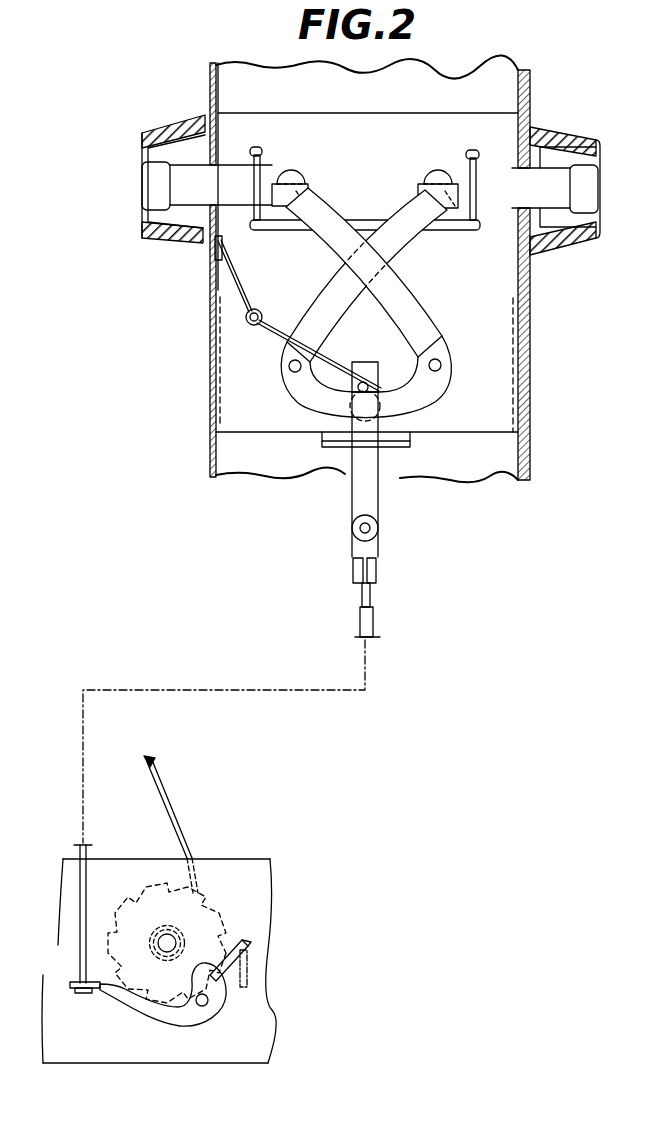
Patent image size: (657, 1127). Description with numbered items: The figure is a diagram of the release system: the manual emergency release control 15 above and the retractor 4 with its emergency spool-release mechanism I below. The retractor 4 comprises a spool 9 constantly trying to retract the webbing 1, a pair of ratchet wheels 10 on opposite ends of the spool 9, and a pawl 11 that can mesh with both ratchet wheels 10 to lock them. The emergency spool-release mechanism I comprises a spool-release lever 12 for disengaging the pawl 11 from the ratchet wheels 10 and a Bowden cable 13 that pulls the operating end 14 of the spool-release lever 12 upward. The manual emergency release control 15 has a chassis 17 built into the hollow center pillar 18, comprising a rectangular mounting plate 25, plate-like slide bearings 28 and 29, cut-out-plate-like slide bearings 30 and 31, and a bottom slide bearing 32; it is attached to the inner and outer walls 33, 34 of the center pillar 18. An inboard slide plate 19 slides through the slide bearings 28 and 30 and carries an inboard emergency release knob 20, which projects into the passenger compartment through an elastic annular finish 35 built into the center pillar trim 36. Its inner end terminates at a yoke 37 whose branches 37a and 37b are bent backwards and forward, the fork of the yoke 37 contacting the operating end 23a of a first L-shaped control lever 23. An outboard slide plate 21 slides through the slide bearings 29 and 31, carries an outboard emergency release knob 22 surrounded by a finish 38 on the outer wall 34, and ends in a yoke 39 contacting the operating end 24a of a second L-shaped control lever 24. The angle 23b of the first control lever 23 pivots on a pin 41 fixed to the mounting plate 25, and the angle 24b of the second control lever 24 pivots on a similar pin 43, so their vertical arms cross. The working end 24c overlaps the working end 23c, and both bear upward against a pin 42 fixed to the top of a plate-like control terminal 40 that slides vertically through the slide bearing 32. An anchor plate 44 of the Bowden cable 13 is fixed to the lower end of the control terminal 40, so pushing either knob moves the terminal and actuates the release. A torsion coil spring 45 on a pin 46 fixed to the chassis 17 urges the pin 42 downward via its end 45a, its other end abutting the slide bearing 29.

The webbing 1 is at (168, 792).
The retractor 4 is at (238, 850).
The spool 9 is at (142, 874).
The ratchet wheels 10 is at (225, 917).
The pawl 11 is at (250, 945).
The spool-release lever 12 is at (128, 1004).
The Bowden cable 13 is at (80, 884).
The operating end 14 is at (80, 992).
The manual emergency release control 15 is at (488, 100).
The chassis 17 is at (475, 445).
The center pillar 18 is at (200, 69).
The inboard slide plate 19 is at (546, 185).
The inboard emergency release knob 20 is at (590, 184).
The outboard slide plate 21 is at (243, 205).
The outboard emergency release knob 22 is at (150, 186).
The first L-shaped control lever 23 is at (336, 286).
The operating end 23a is at (441, 178).
The angle 23b is at (289, 369).
The working end 23c is at (325, 430).
The second L-shaped control lever 24 is at (412, 310).
The operating end 24a is at (289, 178).
The angle 24b is at (452, 374).
The working end 24c is at (370, 445).
The mounting plate 25 is at (505, 318).
The slide bearing 28 is at (528, 265).
The slide bearing 29 is at (212, 245).
The slide bearing 30 is at (477, 200).
The slide bearing 31 is at (259, 165).
The slide bearing 32 is at (405, 447).
The inner wall 33 is at (530, 470).
The outer wall 34 is at (208, 426).
The annular finish 35 is at (586, 138).
The center pillar trim 36 is at (528, 385).
The yoke 37 is at (438, 160).
The branch 37a is at (420, 183).
The branch 37b is at (447, 210).
The finish 38 is at (172, 135).
The yoke 39 is at (300, 180).
The control terminal 40 is at (355, 495).
The pin 41 is at (291, 374).
The pin 42 is at (360, 364).
The pin 43 is at (441, 359).
The anchor plate 44 is at (370, 549).
The torsion coil spring 45 is at (266, 338).
The end of torsion coil spring 45a is at (372, 384).
The pin 46 is at (257, 310).
The emergency spool-release mechanism I is at (171, 1040).